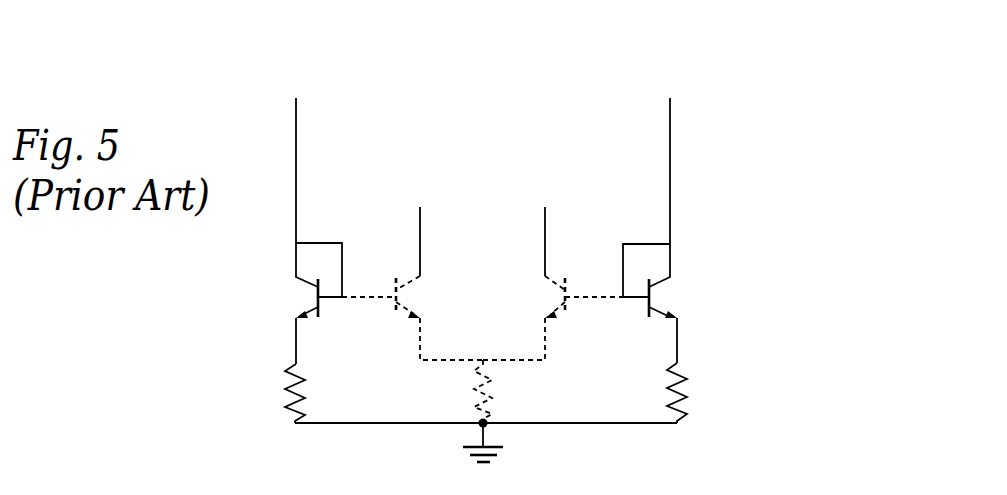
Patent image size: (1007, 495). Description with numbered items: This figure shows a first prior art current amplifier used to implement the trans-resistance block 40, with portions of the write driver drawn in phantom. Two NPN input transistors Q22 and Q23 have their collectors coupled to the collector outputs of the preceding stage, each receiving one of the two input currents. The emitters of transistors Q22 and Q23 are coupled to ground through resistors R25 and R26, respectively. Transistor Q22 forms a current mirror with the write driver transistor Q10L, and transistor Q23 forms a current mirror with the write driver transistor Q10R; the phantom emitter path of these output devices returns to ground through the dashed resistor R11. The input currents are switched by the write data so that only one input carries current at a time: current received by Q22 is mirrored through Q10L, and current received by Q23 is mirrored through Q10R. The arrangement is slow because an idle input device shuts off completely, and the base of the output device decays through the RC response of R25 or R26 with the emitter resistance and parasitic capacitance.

The trans-resistance block 40 is at (807, 168).
The NPN transistor Q22 is at (287, 303).
The NPN transistor Q23 is at (668, 303).
The output device of the write driver Q10R is at (412, 318).
The output device of the write driver Q10L is at (553, 318).
The resistor R25 is at (277, 393).
The resistor R26 is at (699, 393).
The resistor R11 (dashed) R11 is at (502, 391).